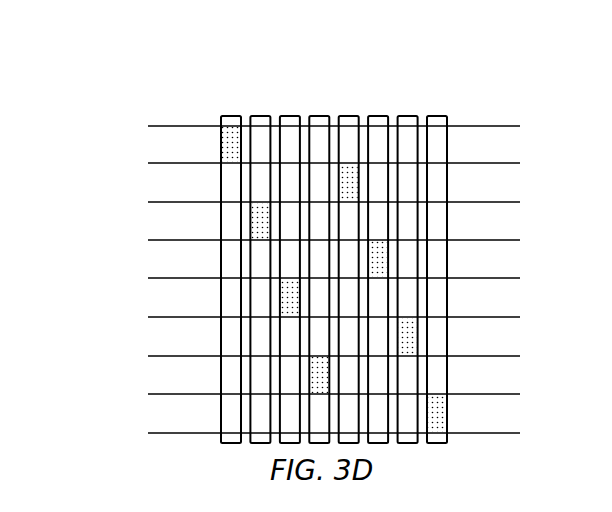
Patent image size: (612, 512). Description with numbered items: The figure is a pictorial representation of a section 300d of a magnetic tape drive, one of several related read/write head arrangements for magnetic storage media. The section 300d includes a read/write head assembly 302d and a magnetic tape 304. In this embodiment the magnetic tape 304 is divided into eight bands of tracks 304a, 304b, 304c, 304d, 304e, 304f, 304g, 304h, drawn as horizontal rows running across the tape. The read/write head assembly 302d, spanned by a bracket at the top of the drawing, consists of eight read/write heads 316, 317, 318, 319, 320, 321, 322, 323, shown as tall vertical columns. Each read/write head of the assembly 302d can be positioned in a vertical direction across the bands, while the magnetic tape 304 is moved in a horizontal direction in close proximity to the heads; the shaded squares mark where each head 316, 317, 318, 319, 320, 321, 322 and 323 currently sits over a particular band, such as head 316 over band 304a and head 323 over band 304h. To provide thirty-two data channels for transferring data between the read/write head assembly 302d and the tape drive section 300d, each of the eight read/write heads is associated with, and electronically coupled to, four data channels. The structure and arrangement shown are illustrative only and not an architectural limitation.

The section of a magnetic tape drive 300d is at (199, 84).
The read/write head assembly 302d is at (450, 107).
The magnetic tape 304 is at (468, 125).
The band of tracks 304a is at (142, 142).
The band of tracks 304b is at (142, 180).
The band of tracks 304c is at (142, 220).
The band of tracks 304d is at (142, 258).
The band of tracks 304e is at (140, 300).
The band of tracks 304f is at (140, 338).
The band of tracks 304g is at (140, 377).
The band of tracks 304h is at (140, 415).
The read/write head 316 is at (222, 148).
The read/write head 317 is at (252, 212).
The read/write head 318 is at (282, 288).
The read/write head 319 is at (311, 366).
The read/write head 320 is at (352, 186).
The read/write head 321 is at (383, 268).
The read/write head 322 is at (411, 344).
The read/write head 323 is at (440, 410).